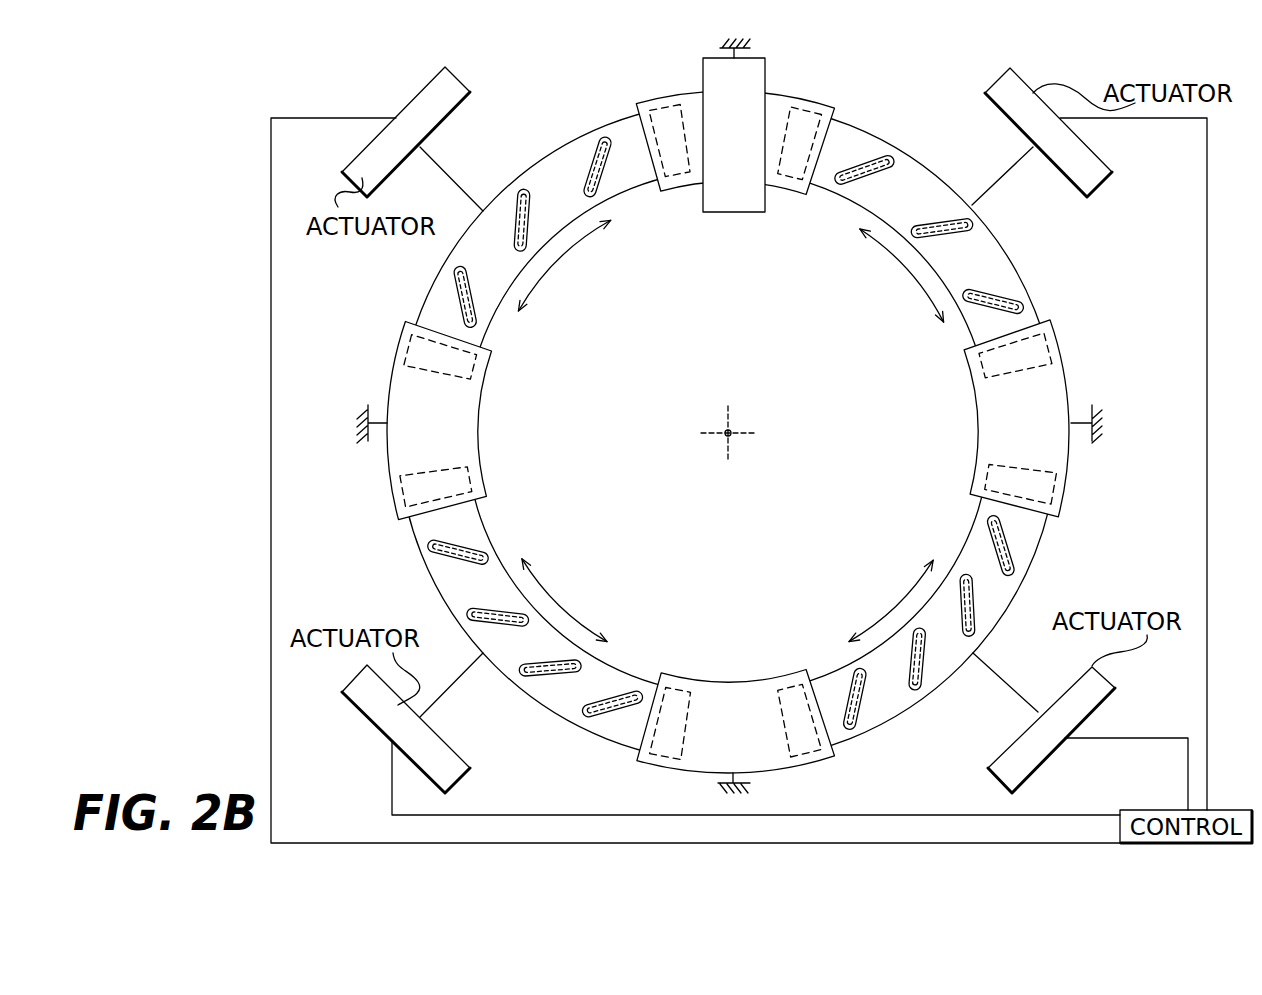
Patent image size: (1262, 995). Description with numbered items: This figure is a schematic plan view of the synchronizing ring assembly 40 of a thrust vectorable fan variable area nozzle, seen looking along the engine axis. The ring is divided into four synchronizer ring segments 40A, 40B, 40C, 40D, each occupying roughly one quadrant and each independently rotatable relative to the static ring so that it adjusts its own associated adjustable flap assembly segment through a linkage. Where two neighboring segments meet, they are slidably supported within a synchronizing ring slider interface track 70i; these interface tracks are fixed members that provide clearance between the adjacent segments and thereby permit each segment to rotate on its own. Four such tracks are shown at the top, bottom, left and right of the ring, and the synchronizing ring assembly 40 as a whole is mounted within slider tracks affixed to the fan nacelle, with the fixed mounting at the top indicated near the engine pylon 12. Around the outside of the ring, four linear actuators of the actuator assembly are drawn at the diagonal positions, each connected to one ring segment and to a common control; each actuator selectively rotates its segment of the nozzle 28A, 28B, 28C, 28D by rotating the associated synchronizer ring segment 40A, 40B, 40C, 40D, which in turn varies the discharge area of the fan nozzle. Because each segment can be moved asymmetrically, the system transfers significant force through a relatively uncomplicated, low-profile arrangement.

The engine pylon 12 is at (750, 80).
The synchronizing ring assembly 40 is at (919, 104).
The synchronizer ring segment 40A is at (562, 158).
The synchronizer ring segment 40B is at (448, 588).
The synchronizer ring segment 40C is at (888, 697).
The synchronizer ring segment 40D is at (988, 257).
The synchronizing ring slider interface track 70i is at (460, 430).
The segment of the FVAN 28A is at (432, 84).
The segment of the FVAN 28B is at (463, 767).
The segment of the FVAN 28C is at (1053, 735).
The segment of the FVAN 28D is at (1082, 153).